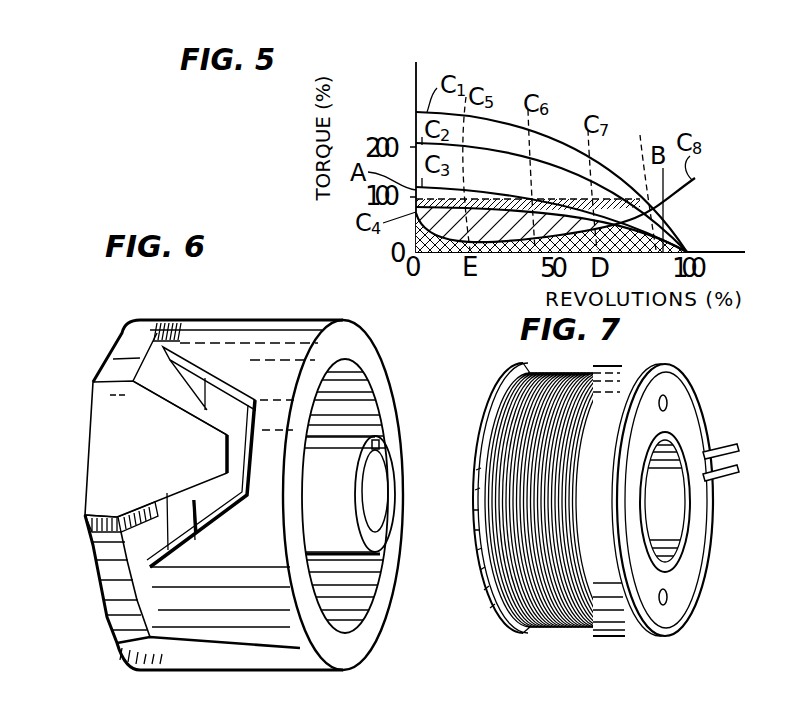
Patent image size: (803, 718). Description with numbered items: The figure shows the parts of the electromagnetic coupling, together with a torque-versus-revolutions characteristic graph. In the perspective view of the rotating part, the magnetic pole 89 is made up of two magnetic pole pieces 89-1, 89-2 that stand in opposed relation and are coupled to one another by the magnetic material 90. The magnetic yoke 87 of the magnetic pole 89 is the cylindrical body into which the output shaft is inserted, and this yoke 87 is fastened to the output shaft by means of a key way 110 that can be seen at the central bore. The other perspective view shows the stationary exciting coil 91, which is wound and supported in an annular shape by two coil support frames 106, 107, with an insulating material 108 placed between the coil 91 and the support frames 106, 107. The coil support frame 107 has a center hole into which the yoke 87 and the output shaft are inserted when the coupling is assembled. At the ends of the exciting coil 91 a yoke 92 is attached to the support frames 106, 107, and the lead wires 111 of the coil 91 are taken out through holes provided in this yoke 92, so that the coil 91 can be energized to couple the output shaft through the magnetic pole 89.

In FIG. 6, the magnetic yoke 87 is at (110, 590).
In FIG. 6, the magnetic pole 89 is at (88, 436).
In FIG. 6, the magnetic pole piece 89-1 is at (110, 405).
In FIG. 6, the magnetic pole piece 89-2 is at (252, 328).
In FIG. 6, the magnetic material 90 is at (190, 400).
In FIG. 6, the key way 110 is at (379, 443).
In FIG. 7, the exciting coil 91 is at (556, 630).
In FIG. 7, the yoke 92 is at (672, 615).
In FIG. 7, the coil support frame 106 is at (626, 634).
In FIG. 7, the coil support frame 107 is at (478, 548).
In FIG. 7, the insulating material 108 is at (491, 598).
In FIG. 7, the lead wires 111 is at (718, 447).